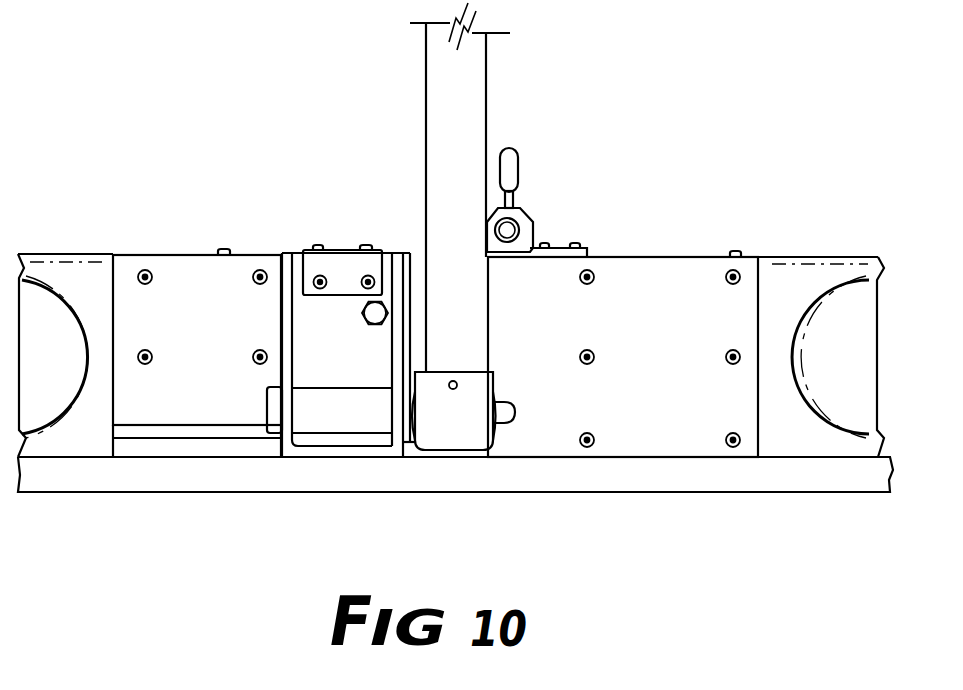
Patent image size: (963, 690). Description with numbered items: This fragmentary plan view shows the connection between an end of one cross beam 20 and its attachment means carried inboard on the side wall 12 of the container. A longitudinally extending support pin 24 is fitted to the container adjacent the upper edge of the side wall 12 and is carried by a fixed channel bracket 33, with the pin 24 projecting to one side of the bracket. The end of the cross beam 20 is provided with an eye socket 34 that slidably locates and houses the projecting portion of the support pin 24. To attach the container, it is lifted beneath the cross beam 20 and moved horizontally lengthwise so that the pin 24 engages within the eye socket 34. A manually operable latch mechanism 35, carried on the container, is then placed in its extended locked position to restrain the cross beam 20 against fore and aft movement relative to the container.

The side wall 12 is at (662, 478).
The cross beam 20 is at (470, 110).
The support pin 24 is at (340, 408).
The channel bracket 33 is at (284, 337).
The eye socket 34 is at (465, 427).
The latch mechanism 35 is at (528, 220).